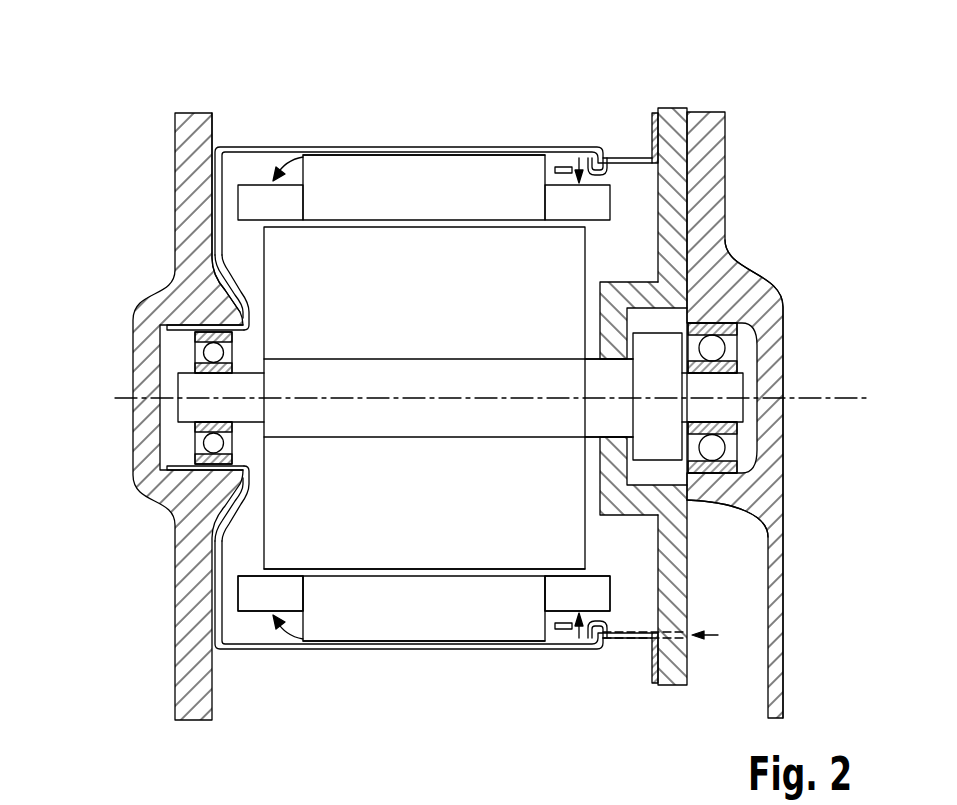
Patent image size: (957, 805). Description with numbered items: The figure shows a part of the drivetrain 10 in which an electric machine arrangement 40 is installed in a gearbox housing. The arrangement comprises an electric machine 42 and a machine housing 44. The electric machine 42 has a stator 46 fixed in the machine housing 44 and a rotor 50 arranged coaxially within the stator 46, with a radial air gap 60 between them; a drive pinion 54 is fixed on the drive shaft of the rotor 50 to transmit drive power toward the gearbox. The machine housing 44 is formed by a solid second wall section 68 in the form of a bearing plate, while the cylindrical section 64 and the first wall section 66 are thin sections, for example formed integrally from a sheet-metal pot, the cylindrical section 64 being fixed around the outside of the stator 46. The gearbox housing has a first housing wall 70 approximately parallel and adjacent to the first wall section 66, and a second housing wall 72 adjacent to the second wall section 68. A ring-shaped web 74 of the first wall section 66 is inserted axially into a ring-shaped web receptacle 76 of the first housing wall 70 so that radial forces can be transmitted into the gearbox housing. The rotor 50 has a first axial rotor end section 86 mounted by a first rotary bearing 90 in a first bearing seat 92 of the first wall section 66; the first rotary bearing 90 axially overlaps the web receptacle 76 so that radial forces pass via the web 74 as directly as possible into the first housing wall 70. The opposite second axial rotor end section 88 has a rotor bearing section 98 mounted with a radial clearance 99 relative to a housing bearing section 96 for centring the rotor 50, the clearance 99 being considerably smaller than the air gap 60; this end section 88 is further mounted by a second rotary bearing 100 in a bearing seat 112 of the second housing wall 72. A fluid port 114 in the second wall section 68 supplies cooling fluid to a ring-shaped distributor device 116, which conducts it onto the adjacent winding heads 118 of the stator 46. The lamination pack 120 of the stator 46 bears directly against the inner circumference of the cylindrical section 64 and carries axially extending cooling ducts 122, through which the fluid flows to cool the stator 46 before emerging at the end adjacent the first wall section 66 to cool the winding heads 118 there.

The drivetrain 10 is at (466, 384).
The electric machine arrangement 40 is at (696, 381).
The electric machine 42 is at (388, 384).
The machine housing 44 is at (253, 145).
The stator 46 is at (341, 170).
The rotor 50 is at (297, 250).
The drive pinion 54 is at (768, 340).
The air gap 60 is at (508, 572).
The cylindrical section 64 is at (395, 147).
The first wall section 66 is at (203, 285).
The second wall section 68 is at (672, 208).
The first housing wall 70 is at (190, 628).
The second housing wall 72 is at (712, 160).
The ring-shaped web 74 is at (173, 333).
The ring-shaped web receptacle 76 is at (198, 320).
The first axial rotor end section 86 is at (185, 378).
The second axial rotor end section 88 is at (730, 385).
The first rotary bearing 90 is at (220, 443).
The first bearing seat 92 is at (195, 466).
The housing bearing section 96 is at (610, 453).
The rotor bearing section 98 is at (612, 432).
The radial clearance 99 is at (611, 362).
The second rotary bearing 100 is at (715, 445).
The bearing seat 112 is at (716, 473).
The fluid port 114 is at (663, 648).
The distributor device 116 is at (590, 640).
The winding heads 118 is at (250, 591).
The lamination pack 120 is at (362, 625).
The cooling ducts 122 is at (463, 155).